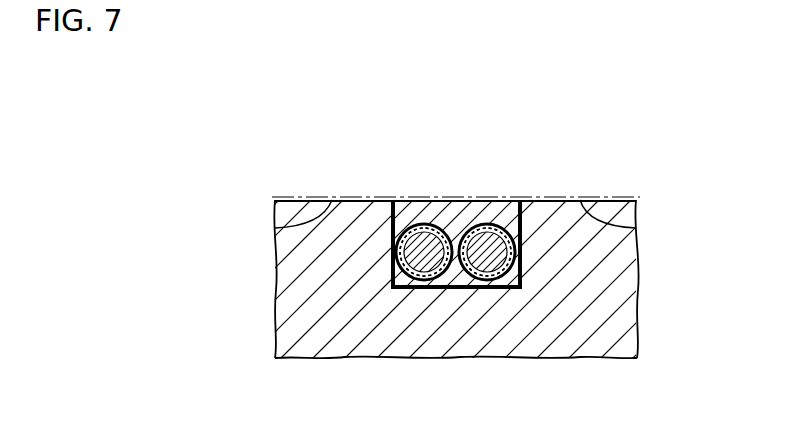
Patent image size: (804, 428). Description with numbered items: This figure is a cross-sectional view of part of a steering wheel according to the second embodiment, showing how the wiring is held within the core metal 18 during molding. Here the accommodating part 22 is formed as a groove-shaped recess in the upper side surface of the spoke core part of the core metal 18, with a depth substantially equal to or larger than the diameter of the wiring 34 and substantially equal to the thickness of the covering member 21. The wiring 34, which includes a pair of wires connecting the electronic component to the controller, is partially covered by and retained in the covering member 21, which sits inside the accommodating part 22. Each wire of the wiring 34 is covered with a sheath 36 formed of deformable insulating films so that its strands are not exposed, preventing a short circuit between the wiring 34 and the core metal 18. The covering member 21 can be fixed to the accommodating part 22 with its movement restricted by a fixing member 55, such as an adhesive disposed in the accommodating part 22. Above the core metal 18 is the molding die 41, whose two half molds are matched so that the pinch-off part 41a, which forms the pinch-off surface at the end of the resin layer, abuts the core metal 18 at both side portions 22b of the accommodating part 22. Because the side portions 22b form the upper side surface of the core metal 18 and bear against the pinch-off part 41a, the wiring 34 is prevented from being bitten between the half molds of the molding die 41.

The core metal 18 is at (579, 347).
The covering member 21 is at (460, 208).
The accommodating part 22 is at (521, 278).
The side portions 22b is at (376, 200).
The wiring 34 is at (418, 283).
The sheath 36 is at (390, 288).
The molding die 41 is at (277, 229).
The pinch-off part 41a is at (636, 228).
The fixing member 55 is at (390, 269).